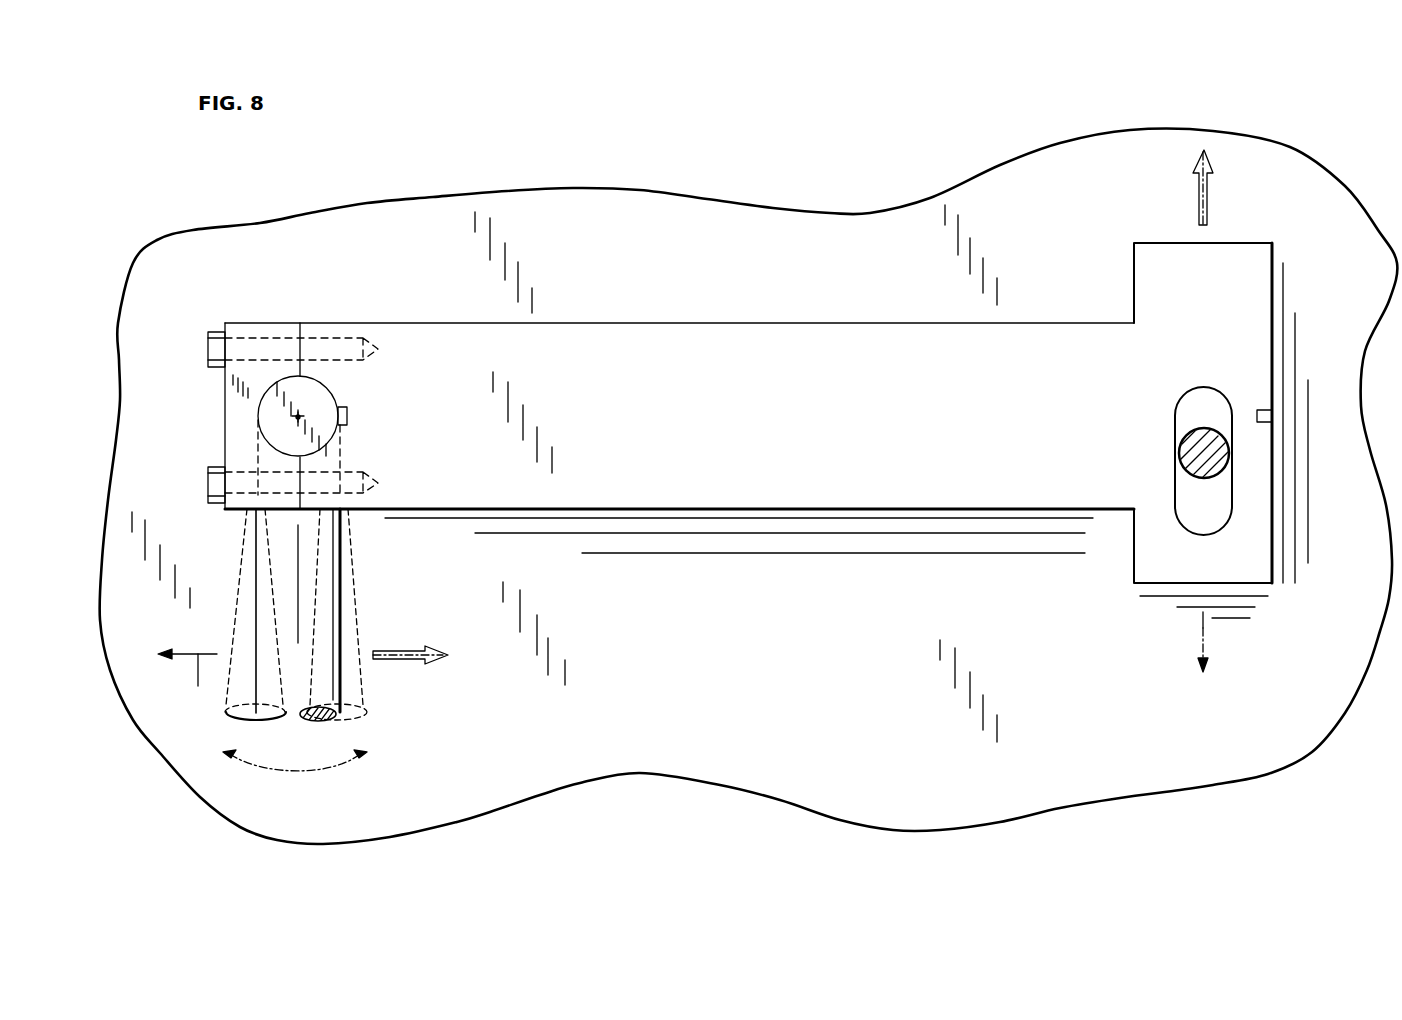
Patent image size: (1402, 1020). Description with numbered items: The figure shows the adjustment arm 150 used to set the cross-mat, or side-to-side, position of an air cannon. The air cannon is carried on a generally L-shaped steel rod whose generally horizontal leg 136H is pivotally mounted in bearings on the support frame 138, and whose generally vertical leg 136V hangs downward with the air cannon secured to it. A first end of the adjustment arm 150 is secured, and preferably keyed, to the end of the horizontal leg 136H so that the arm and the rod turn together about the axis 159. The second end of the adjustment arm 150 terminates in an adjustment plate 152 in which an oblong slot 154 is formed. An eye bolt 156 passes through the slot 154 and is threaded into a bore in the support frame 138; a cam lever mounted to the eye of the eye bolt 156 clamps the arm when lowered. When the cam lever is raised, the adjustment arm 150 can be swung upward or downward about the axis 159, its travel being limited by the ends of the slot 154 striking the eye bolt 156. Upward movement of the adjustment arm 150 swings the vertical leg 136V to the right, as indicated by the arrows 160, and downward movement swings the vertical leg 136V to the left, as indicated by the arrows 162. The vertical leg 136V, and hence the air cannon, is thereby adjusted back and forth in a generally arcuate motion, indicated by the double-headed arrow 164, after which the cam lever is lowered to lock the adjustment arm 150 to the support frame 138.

The generally horizontal leg 136H is at (273, 418).
The generally vertical leg 136V is at (328, 573).
The support frame 138 is at (768, 666).
The adjustment arm 150 is at (710, 347).
The adjustment plate 152 is at (1182, 278).
The oblong slot 154 is at (1180, 503).
The eye bolt 156 is at (1203, 442).
The axis 159 is at (298, 417).
The arrows 160 is at (410, 660).
The arrows 162 is at (198, 686).
The double-headed arrow 164 is at (310, 773).